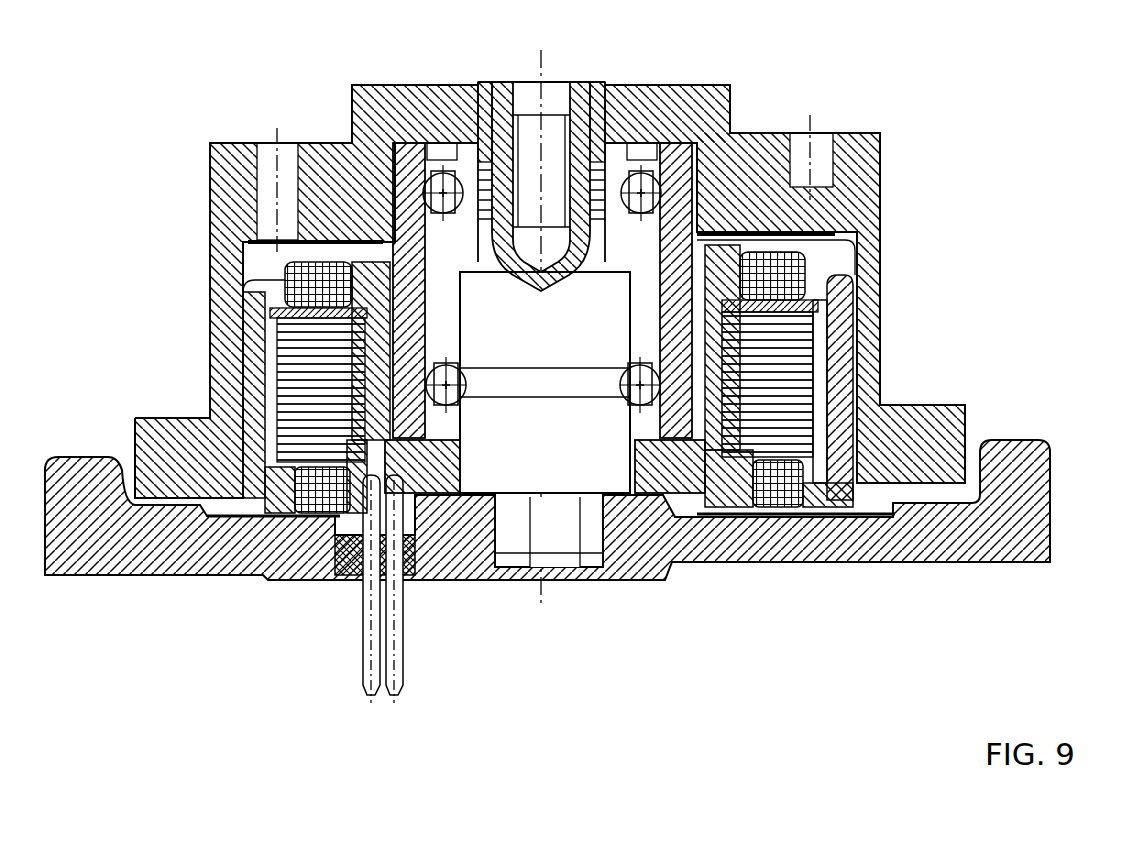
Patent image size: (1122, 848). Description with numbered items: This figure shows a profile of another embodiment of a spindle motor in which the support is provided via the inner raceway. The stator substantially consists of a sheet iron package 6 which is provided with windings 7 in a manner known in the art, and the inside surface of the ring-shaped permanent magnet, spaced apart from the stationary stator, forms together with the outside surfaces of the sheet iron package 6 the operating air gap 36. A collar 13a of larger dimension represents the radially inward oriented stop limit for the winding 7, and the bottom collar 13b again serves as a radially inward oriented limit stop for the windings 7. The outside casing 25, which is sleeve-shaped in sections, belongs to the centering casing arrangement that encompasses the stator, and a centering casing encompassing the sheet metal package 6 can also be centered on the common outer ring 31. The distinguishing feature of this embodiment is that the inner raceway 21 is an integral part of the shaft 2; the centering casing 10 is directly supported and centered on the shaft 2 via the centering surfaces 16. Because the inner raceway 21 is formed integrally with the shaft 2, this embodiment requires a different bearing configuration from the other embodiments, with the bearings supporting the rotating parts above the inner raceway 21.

The common outer ring 31 is at (880, 133).
The collar 13a is at (720, 256).
The bottom collar 13b is at (740, 498).
The windings 7 is at (776, 292).
The operating air gap 36 is at (825, 330).
The sheet iron package 6 is at (768, 378).
The outside casing 25 is at (823, 433).
The centering surfaces 16 is at (467, 464).
The inner raceway 21 is at (560, 450).
The shaft 2 is at (560, 450).
The centering casing 10 is at (699, 591).